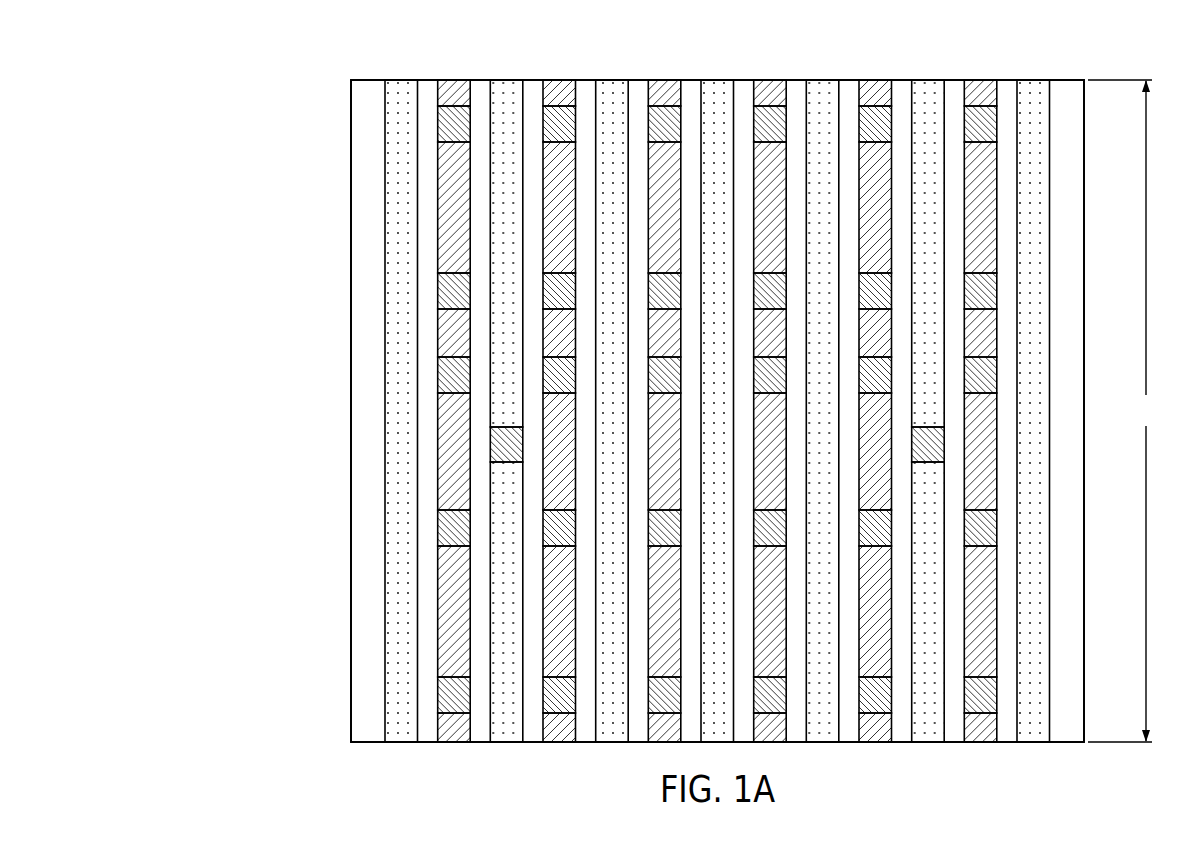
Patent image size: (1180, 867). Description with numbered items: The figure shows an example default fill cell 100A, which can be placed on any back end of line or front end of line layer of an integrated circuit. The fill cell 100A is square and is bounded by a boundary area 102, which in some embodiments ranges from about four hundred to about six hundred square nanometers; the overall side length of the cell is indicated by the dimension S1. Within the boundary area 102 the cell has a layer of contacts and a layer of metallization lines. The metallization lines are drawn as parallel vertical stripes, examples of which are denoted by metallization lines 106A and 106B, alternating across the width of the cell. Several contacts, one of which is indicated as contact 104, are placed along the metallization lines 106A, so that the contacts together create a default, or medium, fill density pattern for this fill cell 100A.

The default fill cell 100A is at (290, 94).
The boundary area 102 is at (1066, 80).
The contact 104 is at (764, 110).
The metallization line 106A is at (557, 86).
The metallization line 106B is at (615, 86).
The dimension S1 is at (1123, 411).